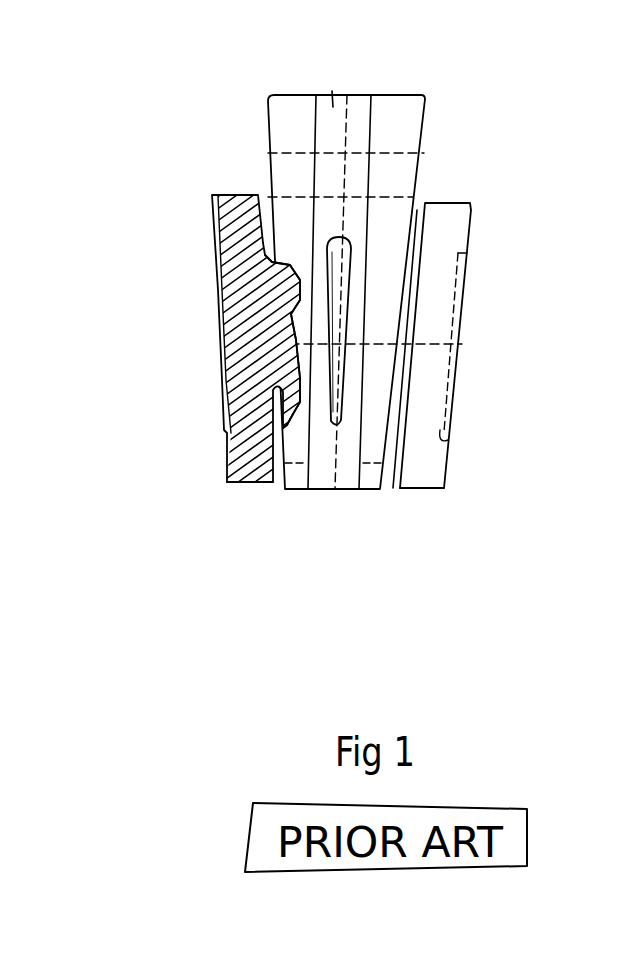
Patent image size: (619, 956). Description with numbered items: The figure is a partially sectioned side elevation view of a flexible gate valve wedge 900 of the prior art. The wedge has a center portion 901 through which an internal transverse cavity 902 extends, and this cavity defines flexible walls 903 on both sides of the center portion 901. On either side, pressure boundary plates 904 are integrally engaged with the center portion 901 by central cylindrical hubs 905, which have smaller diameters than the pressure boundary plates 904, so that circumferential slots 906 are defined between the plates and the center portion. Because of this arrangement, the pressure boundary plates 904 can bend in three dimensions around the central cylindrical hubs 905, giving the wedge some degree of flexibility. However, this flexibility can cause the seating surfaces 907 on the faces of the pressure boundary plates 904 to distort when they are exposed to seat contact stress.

The flexible gate valve wedge 900 is at (462, 127).
The center portion 901 is at (388, 221).
The internal transverse cavity 902 is at (333, 240).
The flexible walls 903 is at (300, 334).
The pressure boundary plates 904 is at (215, 214).
The central cylindrical hubs 905 is at (272, 297).
The circumferential slots 906 is at (263, 243).
The seating surfaces 907 is at (226, 463).